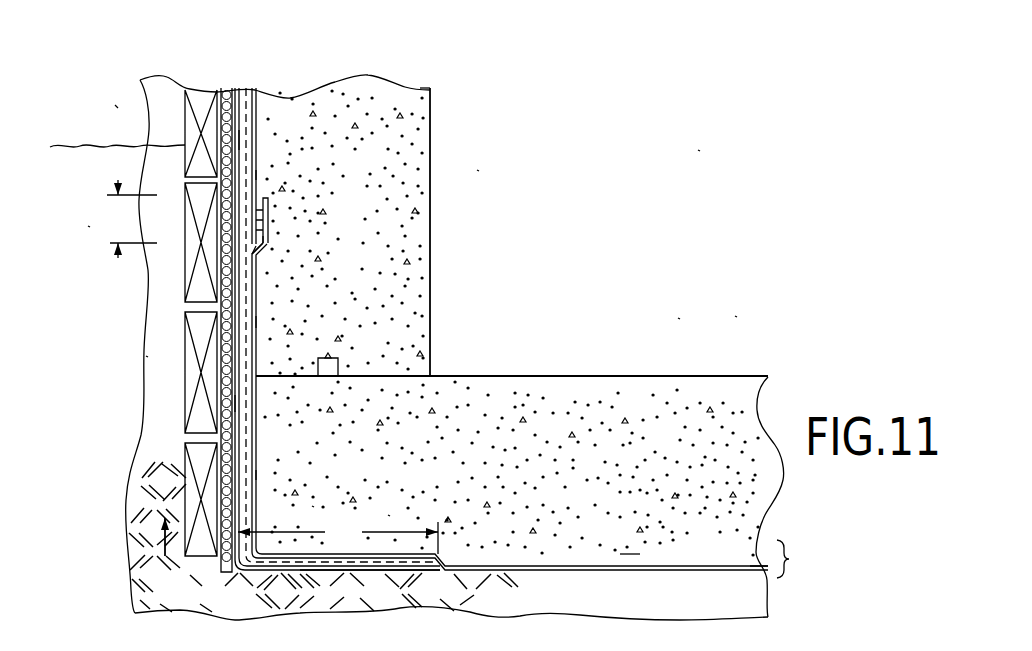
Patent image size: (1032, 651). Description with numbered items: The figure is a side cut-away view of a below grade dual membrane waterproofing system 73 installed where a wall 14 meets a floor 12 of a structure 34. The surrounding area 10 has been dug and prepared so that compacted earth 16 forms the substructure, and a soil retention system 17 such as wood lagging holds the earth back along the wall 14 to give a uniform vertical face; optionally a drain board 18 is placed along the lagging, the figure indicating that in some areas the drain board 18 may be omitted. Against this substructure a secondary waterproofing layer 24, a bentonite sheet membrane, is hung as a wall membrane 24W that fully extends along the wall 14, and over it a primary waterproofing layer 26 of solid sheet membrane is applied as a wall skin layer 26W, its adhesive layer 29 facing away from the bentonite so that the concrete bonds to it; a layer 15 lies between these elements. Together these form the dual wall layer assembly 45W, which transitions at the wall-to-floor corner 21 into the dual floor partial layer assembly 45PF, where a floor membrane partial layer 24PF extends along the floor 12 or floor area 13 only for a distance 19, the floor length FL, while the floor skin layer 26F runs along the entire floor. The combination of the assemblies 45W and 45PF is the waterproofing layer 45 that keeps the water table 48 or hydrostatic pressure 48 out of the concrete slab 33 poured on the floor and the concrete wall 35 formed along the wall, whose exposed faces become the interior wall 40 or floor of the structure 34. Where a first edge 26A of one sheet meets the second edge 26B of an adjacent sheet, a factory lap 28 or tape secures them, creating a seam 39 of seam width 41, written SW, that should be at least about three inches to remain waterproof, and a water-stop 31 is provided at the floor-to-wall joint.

The area 10 is at (254, 591).
The floor 12 is at (678, 318).
The floor area 13 is at (735, 316).
The wall 14 is at (477, 170).
The drainage / air gap layer 15 is at (234, 137).
The compacted earth 16 is at (153, 100).
The soil retention system 17 is at (194, 104).
The drain board 18 is at (227, 104).
The distance 19 is at (388, 515).
The wall-to-floor corner 21 is at (312, 506).
The secondary waterproofing layer 24 is at (240, 92).
The floor membrane partial layer 24PF is at (370, 591).
The wall membrane 24W is at (238, 404).
The primary waterproofing layer 26 is at (257, 95).
The first edge 26A is at (261, 238).
The second edge 26B is at (267, 247).
The floor skin layer 26F is at (634, 534).
The wall skin layer 26W is at (258, 172).
The factory lap 28 is at (268, 221).
The adhesive layer 29 is at (257, 320).
The water-stop 31 is at (335, 358).
The concrete slab 33 is at (705, 390).
The structure 34 is at (340, 103).
The concrete wall 35 is at (398, 95).
The seam 39 is at (253, 254).
The interior wall 40 is at (432, 116).
The seam width 41 is at (88, 226).
The dual membrane waterproofing system 45 is at (115, 105).
The dual floor partial layer assembly 45PF is at (813, 559).
The dual wall layer assembly 45W is at (146, 356).
The water table 48 is at (95, 149).
The below grade dual membrane waterproofing system 73 is at (698, 150).
The floor length FL is at (338, 538).
The seam width SW is at (126, 219).